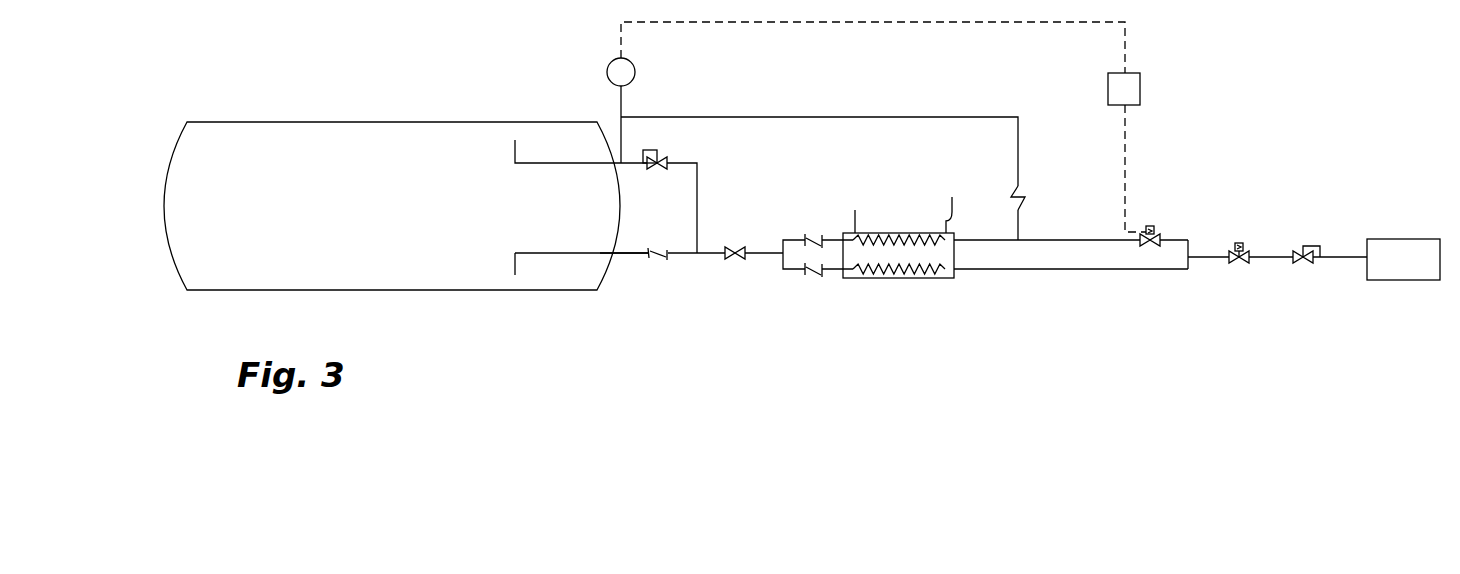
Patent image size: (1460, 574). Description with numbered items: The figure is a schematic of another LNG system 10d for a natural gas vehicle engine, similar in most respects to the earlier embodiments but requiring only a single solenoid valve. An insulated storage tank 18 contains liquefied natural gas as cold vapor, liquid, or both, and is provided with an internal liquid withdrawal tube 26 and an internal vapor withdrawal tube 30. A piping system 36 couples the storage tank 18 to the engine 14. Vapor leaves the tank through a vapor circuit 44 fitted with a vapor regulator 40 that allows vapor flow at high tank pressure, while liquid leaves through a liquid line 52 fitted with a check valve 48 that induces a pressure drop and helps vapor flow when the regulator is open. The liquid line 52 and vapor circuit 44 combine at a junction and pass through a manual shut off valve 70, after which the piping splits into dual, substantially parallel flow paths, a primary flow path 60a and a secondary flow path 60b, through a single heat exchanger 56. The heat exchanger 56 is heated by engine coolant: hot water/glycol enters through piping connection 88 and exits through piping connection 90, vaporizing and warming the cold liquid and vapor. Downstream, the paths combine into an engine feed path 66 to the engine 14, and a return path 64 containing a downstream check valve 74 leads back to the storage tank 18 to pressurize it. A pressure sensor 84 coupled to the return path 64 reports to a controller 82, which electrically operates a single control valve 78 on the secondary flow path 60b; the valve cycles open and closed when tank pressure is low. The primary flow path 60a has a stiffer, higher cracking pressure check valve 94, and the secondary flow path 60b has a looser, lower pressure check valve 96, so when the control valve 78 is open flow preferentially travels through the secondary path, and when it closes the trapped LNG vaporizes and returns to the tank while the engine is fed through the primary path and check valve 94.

The system 10d is at (540, 322).
The engine 14 is at (1383, 238).
The insulated storage tank 18 is at (426, 122).
The internal liquid withdrawal tube 26 is at (513, 268).
The internal vapor withdrawal tube 30 is at (513, 148).
The piping system 36 is at (960, 89).
The vapor regulator 40 is at (660, 150).
The vapor circuit 44 is at (698, 186).
The check valve 48 is at (655, 262).
The liquid line 52 is at (624, 256).
The heat exchanger 56 is at (860, 282).
The primary flow path 60a is at (904, 275).
The secondary flow path 60b is at (890, 232).
The return path 64 is at (858, 117).
The engine feed path 66 is at (1203, 285).
The manual shut off valve 70 is at (730, 263).
The downstream check valve 74 is at (1009, 200).
The control valve 78 is at (1149, 226).
The controller 82 is at (1141, 90).
The pressure sensor 84 is at (606, 73).
The piping connection 88 is at (855, 222).
The piping connection 90 is at (940, 202).
The check valve 94 is at (809, 283).
The check valve 96 is at (808, 234).